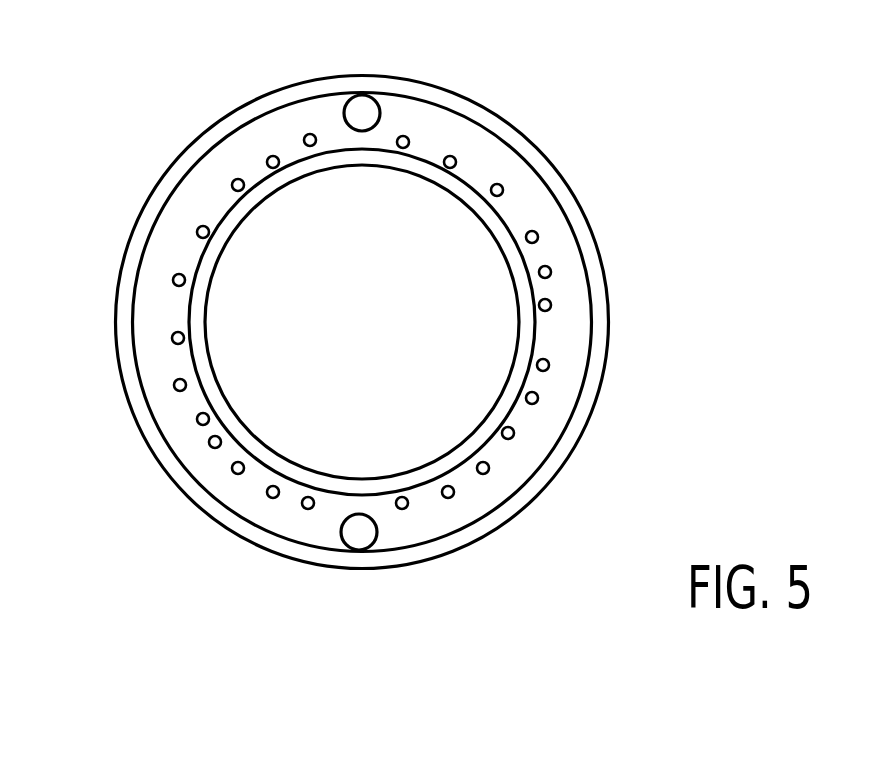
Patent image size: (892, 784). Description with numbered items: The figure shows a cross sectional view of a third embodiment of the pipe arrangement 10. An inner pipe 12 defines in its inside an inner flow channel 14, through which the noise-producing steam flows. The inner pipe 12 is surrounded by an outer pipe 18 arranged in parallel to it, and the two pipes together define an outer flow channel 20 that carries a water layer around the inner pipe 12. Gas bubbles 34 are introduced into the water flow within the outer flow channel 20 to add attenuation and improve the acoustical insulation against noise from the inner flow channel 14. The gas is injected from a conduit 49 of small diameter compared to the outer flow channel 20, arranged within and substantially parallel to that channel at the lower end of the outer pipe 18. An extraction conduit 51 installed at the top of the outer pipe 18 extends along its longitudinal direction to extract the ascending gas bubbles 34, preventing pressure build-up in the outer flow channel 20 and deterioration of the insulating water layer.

The pipe arrangement 10 is at (140, 91).
The inner pipe 12 is at (435, 322).
The inner flow channel 14 is at (425, 394).
The outer pipe 18 is at (327, 319).
The outer flow channel 20 is at (152, 318).
The gas bubbles 34 is at (457, 156).
The conduit 49 is at (340, 533).
The extraction conduit 51 is at (378, 97).